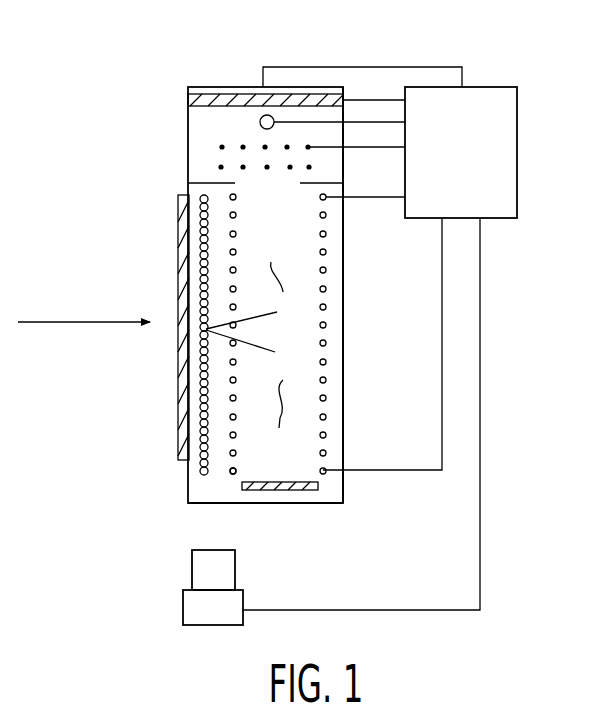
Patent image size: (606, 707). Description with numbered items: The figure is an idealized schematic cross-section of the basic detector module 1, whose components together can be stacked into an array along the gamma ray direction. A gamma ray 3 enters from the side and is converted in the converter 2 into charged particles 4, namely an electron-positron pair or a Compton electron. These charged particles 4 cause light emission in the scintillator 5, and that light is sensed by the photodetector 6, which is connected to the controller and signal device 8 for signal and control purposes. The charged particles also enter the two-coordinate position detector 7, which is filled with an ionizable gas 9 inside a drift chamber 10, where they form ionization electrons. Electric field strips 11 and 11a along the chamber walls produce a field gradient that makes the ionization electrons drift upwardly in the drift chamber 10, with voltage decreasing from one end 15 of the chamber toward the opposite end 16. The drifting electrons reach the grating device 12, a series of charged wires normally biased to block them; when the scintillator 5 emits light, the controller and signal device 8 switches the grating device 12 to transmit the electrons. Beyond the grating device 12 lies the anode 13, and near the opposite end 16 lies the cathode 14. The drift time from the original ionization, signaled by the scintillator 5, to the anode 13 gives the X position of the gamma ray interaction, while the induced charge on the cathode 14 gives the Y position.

The module 1 is at (183, 170).
The converter 2 is at (178, 238).
The gamma ray 3 is at (78, 323).
The charged particles 4 is at (254, 347).
The scintillator 5 is at (203, 412).
The photodetector 6 is at (183, 605).
The two-coordinate position detector 7 is at (281, 516).
The controller and signal device 8 is at (529, 155).
The ionizable gas 9 is at (292, 398).
The drift chamber 10 is at (346, 297).
The electric field strips 11 is at (232, 473).
The electric field strips 11a is at (249, 494).
The grating device 12 is at (222, 147).
The anode 13 is at (268, 116).
The cathode 14 is at (242, 93).
The one end 15 is at (345, 490).
The opposite end 16 is at (343, 255).